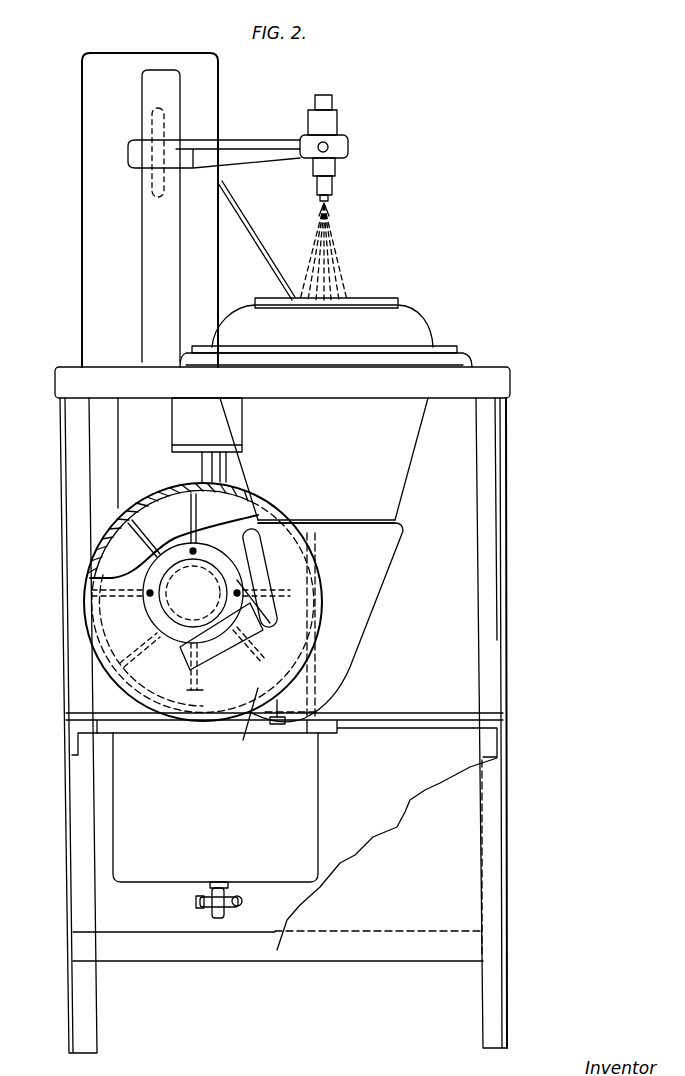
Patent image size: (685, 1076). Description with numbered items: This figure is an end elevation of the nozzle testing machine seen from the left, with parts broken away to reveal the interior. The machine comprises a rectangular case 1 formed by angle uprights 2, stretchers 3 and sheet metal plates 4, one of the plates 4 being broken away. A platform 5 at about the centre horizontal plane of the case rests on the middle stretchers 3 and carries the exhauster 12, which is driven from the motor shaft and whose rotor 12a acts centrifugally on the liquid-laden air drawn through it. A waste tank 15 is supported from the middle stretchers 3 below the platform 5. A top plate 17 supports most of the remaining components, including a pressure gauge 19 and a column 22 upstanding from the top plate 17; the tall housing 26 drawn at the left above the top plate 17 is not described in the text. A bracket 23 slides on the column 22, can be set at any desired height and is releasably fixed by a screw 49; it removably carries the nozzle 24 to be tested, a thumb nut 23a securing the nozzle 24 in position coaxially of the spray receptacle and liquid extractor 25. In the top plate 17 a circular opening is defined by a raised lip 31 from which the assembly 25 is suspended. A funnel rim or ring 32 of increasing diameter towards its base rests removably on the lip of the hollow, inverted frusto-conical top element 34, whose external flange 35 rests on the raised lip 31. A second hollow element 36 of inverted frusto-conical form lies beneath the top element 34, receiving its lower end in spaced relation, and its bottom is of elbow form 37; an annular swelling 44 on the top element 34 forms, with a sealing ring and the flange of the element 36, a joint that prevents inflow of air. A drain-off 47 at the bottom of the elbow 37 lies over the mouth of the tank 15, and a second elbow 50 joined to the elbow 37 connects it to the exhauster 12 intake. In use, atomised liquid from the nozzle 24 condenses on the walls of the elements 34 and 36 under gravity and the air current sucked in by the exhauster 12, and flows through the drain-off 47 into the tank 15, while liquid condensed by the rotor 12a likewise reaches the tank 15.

The rectangular case 1 is at (506, 835).
The angle uprights 2 is at (500, 652).
The stretchers 3 is at (75, 740).
The sheet metal plates 4 is at (388, 905).
The platform 5 is at (434, 721).
The exhauster 12 is at (120, 530).
The rotor 12a is at (142, 520).
The waste tank 15 is at (130, 850).
The top plate 17 is at (466, 380).
The pressure gauge 19 is at (249, 236).
The column 22 is at (152, 219).
The bracket 23 is at (136, 155).
The thumb nut 23a is at (346, 147).
The nozzle 24 is at (326, 119).
The spray receptacle and liquid extractor 25 is at (366, 305).
The housing 26 is at (104, 290).
The raised lip 31 is at (437, 360).
The funnel rim or ring 32 is at (405, 325).
The top element 34 is at (405, 436).
The external flange 35 is at (422, 350).
The second hollow element 36 is at (386, 548).
The elbow 37 is at (258, 700).
The annular swelling 44 is at (388, 512).
The drain-off 47 is at (283, 724).
The screw 49 is at (134, 163).
The second elbow 50 is at (184, 612).